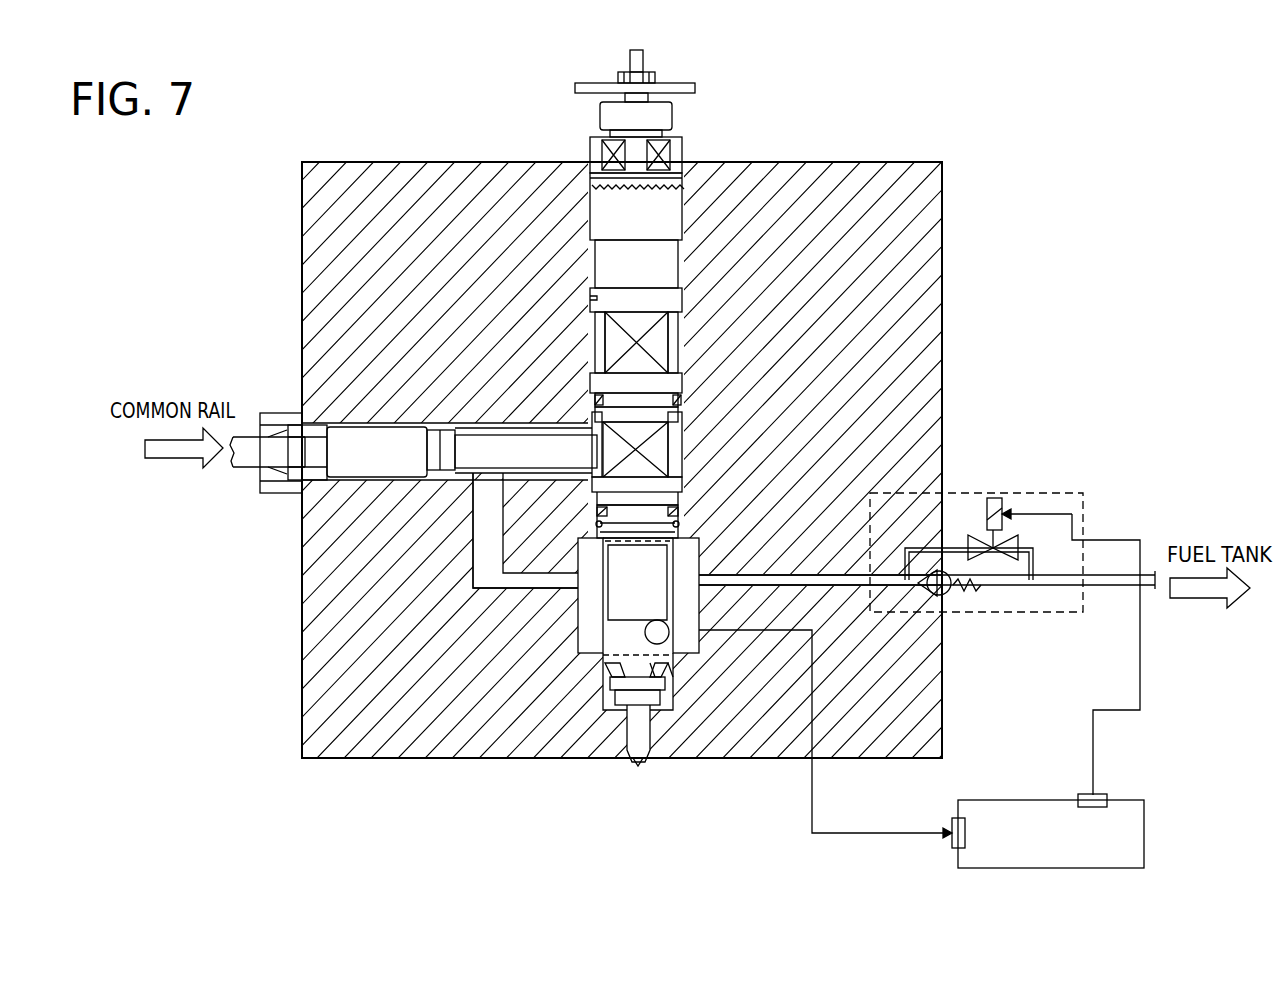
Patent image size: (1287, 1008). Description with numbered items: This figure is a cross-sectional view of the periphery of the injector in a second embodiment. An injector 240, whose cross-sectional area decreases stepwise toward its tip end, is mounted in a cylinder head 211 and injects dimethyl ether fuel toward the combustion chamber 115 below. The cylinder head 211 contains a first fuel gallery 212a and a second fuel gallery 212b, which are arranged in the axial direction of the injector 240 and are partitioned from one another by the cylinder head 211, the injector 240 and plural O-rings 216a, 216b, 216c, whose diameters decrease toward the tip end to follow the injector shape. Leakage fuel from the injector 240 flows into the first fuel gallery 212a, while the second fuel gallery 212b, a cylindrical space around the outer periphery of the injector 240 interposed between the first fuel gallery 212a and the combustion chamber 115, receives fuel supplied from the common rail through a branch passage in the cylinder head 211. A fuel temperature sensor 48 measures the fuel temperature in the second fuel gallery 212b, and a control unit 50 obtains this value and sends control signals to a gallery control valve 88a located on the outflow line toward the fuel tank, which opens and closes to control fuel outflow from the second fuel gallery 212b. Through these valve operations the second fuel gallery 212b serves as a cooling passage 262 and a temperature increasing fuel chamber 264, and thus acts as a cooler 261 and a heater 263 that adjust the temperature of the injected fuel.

The cylinder head 211 is at (770, 162).
The injector 240 is at (688, 83).
The first fuel gallery 212a is at (683, 475).
The second fuel gallery 212b is at (580, 630).
The O-ring 216a is at (682, 398).
The O-ring 216b is at (680, 506).
The O-ring 216c is at (673, 673).
The cooler 261 is at (583, 603).
The cooling passage 262 is at (525, 530).
The heater 263 is at (692, 645).
The temperature increasing fuel chamber 264 is at (820, 580).
The fuel temperature sensor 48 is at (657, 645).
The combustion chamber 115 is at (632, 782).
The gallery control valve 88a is at (1012, 614).
The control unit 50 is at (993, 800).